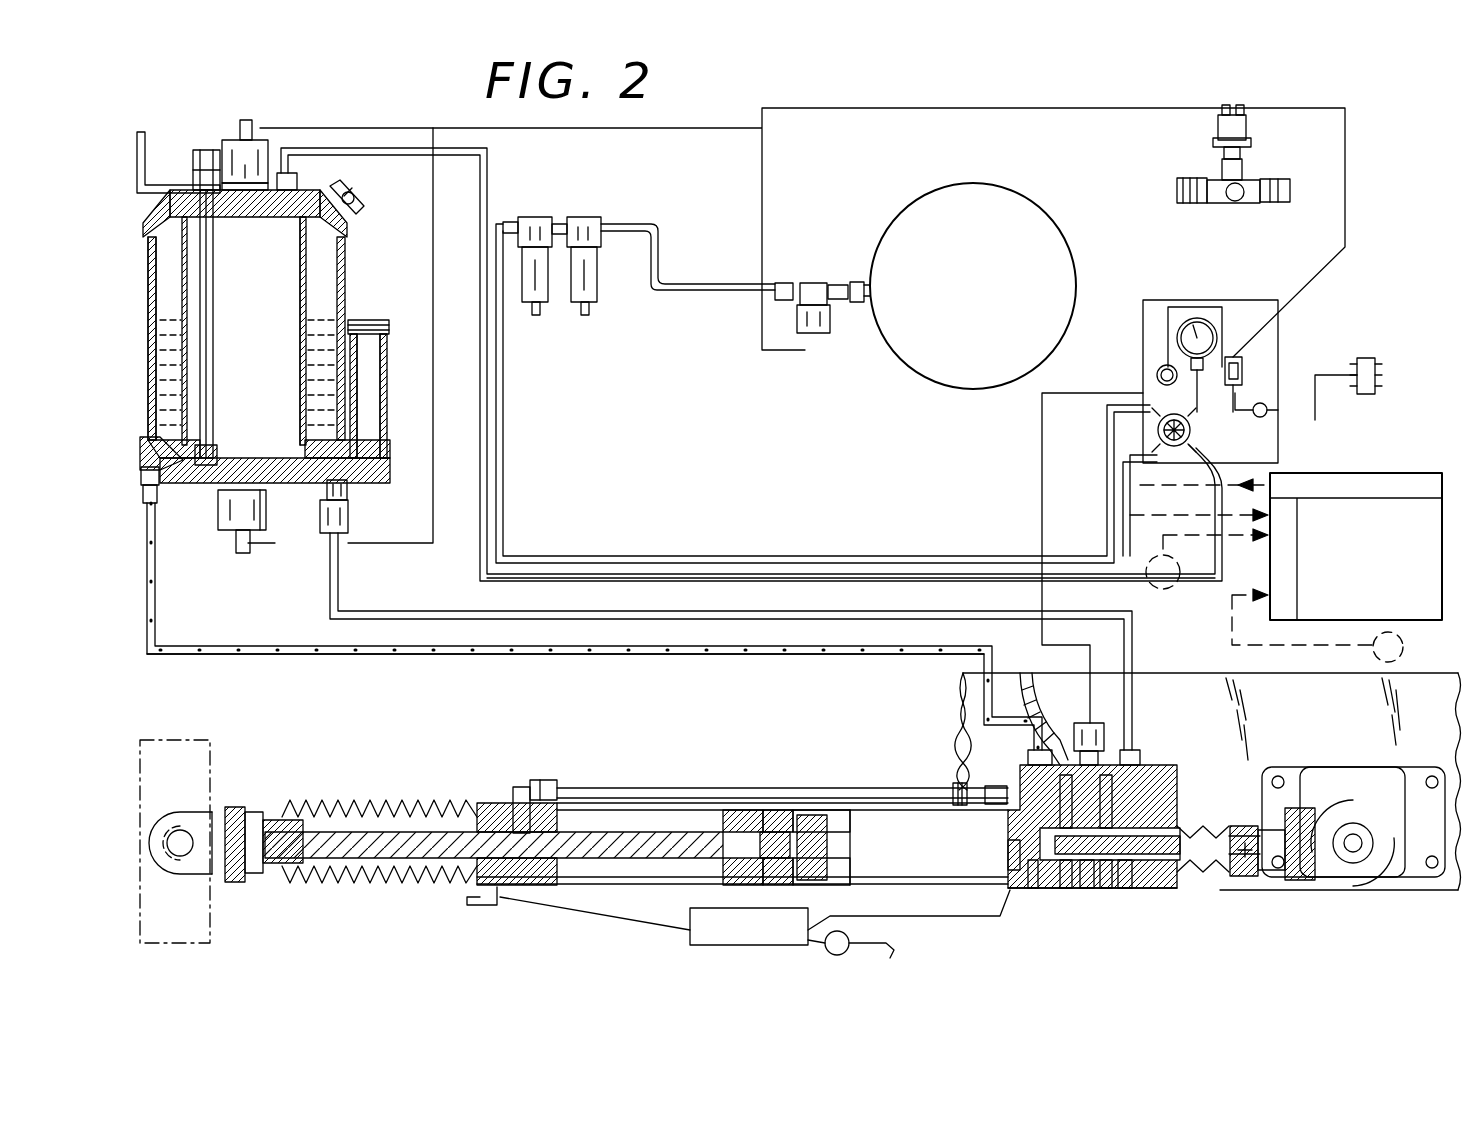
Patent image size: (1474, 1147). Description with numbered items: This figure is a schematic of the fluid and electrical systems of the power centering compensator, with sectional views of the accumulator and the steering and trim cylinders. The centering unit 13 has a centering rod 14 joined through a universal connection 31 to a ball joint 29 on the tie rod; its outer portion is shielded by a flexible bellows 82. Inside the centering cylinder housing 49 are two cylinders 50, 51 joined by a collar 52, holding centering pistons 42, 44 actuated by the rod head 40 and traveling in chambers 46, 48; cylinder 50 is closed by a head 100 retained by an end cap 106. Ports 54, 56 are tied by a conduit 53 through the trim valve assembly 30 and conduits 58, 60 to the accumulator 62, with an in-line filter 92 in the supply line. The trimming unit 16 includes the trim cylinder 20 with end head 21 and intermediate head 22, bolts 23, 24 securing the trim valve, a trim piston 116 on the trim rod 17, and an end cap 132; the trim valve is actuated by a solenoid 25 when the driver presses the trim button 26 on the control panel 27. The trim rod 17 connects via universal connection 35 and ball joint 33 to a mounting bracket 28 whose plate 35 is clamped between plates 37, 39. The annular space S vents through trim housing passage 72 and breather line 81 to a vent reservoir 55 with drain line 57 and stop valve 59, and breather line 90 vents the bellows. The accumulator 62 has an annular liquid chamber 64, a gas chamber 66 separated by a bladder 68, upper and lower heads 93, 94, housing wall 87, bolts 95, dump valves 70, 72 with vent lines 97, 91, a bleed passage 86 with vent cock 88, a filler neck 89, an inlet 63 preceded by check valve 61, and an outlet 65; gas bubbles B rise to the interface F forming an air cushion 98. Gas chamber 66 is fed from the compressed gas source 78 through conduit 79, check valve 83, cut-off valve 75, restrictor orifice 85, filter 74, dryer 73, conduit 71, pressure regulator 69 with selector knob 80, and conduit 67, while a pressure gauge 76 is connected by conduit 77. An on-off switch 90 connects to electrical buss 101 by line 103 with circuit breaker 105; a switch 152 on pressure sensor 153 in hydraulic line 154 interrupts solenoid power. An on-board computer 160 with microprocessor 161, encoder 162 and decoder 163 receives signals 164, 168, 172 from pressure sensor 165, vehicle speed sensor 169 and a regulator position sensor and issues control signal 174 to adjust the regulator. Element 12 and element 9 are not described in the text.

The gear reducer housing 9 is at (1313, 773).
The frame 12 is at (212, 755).
The centering unit 13 is at (549, 910).
The centering rod 14 is at (350, 860).
The trimming unit 16 is at (1165, 907).
The trim rod 17 is at (1215, 875).
The trim cylinder 20 is at (1087, 890).
The end head 21 is at (1125, 890).
The intermediate head 22 is at (1030, 892).
The bolt 23 is at (1033, 701).
The bolt 24 is at (1138, 750).
The solenoid 25 is at (1078, 723).
The trim button 26 is at (1160, 365).
The control panel 27 is at (1260, 300).
The mounting bracket 28 is at (1342, 748).
The ball joint 29 is at (188, 813).
The trim valve assembly 30 is at (1183, 780).
The universal connection 31 is at (243, 900).
The ball joint 33 is at (1360, 885).
The universal connection 35 is at (1293, 880).
The plate 37 is at (1422, 785).
The plate 39 is at (1268, 760).
The rod head 40 is at (805, 818).
The centering piston 42 is at (740, 815).
The centering piston 44 is at (855, 805).
The chamber 46 is at (628, 800).
The chamber 48 is at (935, 838).
The centering cylinder housing 49 is at (520, 900).
The cylinder 50 is at (690, 900).
The cylinder 51 is at (893, 880).
The collar 52 is at (755, 835).
The conduit 53 is at (560, 780).
The port 54 is at (550, 812).
The vent reservoir 55 is at (755, 917).
The port 56 is at (968, 800).
The drain line 57 is at (873, 948).
The return conduit 58 is at (705, 660).
The stop valve 59 is at (815, 935).
The supply conduit 60 is at (666, 618).
The check valve 61 is at (146, 505).
The accumulator 62 is at (382, 260).
The inlet 63 is at (148, 462).
The liquid chamber 64 is at (160, 385).
The outlet 65 is at (348, 488).
The gas chamber 66 is at (254, 308).
The conduit 67 is at (580, 585).
The bladder 68 is at (300, 378).
The pressure regulator 69 is at (1127, 460).
The upper gas dump valve 70 is at (225, 145).
The conduit 71 is at (572, 558).
The lower gas dump valve 72 is at (275, 528).
The dryer 73 is at (548, 310).
The particle filter 74 is at (598, 312).
The cut-off valve 75 is at (822, 335).
The pressure gauge 76 is at (1183, 322).
The conduit 77 is at (1243, 393).
The compressed gas source 78 is at (962, 390).
The conduit 79 is at (632, 224).
The selector knob 80 is at (1158, 425).
The breather line 81 is at (995, 916).
The bellows 82 is at (415, 885).
The check valve 83 is at (783, 282).
The restrictor orifice 85 is at (835, 282).
The bleed passage 86 is at (337, 185).
The outer housing wall 87 is at (148, 275).
The vent cock 88 is at (360, 206).
The filler neck 89 is at (378, 432).
The on-off switch 90 is at (1243, 368).
The drain line 91 is at (238, 548).
The in-line filter 92 is at (349, 518).
The upper head 93 is at (158, 212).
The lower head 94 is at (200, 470).
The bolt 95 is at (215, 230).
The vent line 97 is at (254, 125).
The air cushion 98 is at (332, 312).
The head 100 is at (570, 888).
The electrical buss 101 is at (1376, 347).
The line 103 is at (1316, 420).
The circuit breaker 105 is at (1268, 415).
The end cap 106 is at (515, 800).
The trim piston 116 is at (1035, 890).
The end cap 132 is at (1236, 880).
The switch 152 is at (1215, 122).
The pressure sensor 153 is at (1220, 160).
The hydraulic line 154 is at (1250, 204).
The on-board computer 160 is at (1355, 466).
The microprocessor 161 is at (1418, 612).
The encoder 162 is at (1300, 576).
The decoder 163 is at (1438, 472).
The analog signal 164 is at (1163, 537).
The pressure sensor 165 is at (1148, 590).
The analog signal 168 is at (1232, 630).
The vehicle speed sensor 169 is at (1372, 652).
The analog signal 172 is at (1130, 515).
The analog signal 174 is at (1140, 487).
The gas bubbles B is at (596, 660).
The liquid and gas interface F is at (165, 318).
The annular space S is at (895, 882).